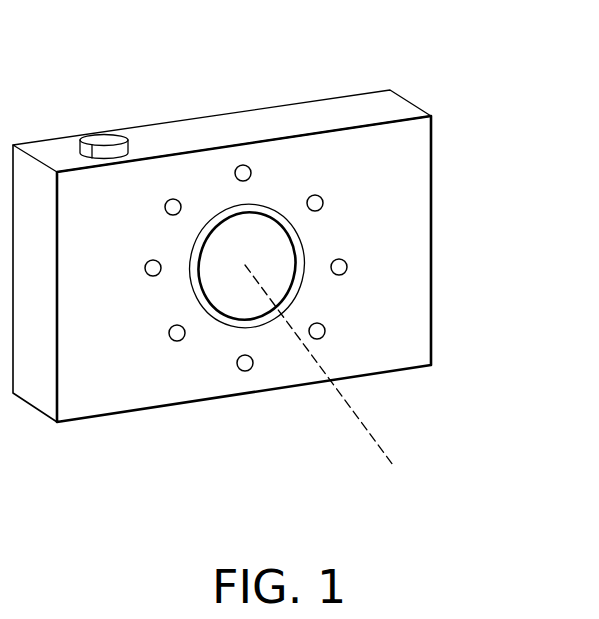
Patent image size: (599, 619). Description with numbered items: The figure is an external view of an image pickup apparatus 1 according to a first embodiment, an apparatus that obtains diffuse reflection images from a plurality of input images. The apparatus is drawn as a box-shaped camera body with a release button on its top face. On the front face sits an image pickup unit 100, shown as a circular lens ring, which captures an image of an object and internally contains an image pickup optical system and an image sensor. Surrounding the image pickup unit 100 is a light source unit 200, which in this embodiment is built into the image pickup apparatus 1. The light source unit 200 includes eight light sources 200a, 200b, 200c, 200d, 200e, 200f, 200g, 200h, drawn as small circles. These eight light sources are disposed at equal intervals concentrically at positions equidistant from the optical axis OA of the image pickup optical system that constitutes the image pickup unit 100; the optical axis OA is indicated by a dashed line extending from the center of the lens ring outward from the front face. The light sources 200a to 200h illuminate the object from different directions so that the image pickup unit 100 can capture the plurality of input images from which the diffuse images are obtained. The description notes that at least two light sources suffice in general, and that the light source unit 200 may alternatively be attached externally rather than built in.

The image pickup apparatus 1 is at (489, 60).
The image pickup unit 100 is at (272, 208).
The light source unit 200 is at (346, 261).
The light source 200a is at (241, 170).
The light source 200b is at (315, 195).
The light source 200c is at (347, 269).
The light source 200d is at (325, 332).
The light source 200e is at (245, 371).
The light source 200f is at (177, 341).
The light source 200g is at (153, 276).
The light source 200h is at (171, 199).
The optical axis OA is at (353, 408).